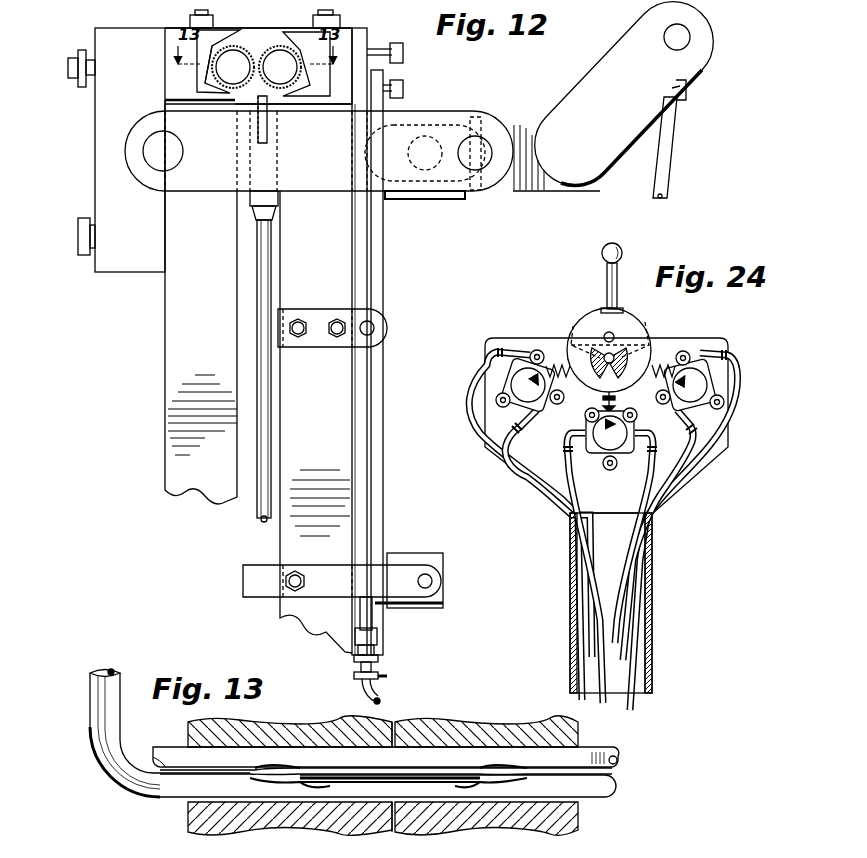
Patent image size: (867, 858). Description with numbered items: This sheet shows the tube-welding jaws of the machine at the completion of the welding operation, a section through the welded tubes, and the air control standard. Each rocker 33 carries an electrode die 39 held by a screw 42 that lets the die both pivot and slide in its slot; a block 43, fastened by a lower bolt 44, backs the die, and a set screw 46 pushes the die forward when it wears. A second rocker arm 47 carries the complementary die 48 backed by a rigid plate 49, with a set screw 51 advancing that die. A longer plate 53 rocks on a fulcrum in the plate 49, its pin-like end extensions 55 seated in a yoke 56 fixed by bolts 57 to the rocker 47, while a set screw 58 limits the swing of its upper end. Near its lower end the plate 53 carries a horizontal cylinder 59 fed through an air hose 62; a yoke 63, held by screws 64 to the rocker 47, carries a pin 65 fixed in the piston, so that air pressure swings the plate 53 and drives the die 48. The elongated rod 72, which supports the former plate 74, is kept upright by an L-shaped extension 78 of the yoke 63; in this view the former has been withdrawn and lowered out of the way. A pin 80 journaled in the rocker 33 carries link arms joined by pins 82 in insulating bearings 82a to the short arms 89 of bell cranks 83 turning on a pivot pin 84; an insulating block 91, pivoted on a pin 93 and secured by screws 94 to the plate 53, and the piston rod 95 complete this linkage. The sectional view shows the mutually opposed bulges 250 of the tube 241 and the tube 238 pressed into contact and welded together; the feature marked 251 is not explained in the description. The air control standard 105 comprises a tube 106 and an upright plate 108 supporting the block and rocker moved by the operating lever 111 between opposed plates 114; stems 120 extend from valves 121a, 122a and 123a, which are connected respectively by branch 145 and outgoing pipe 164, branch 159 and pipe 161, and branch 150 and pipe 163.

In FIG. 12, the rocker 33 is at (165, 455).
In FIG. 12, the electrode die 39 is at (170, 28).
In FIG. 13, the electrode die 39 is at (395, 736).
In FIG. 12, the screw 42 is at (200, 12).
In FIG. 12, the block 43 is at (95, 156).
In FIG. 12, the lower bolt 44 is at (78, 234).
In FIG. 12, the set screw 46 is at (68, 78).
In FIG. 12, the second rocker arm 47 is at (280, 612).
In FIG. 12, the complementary die 48 is at (366, 32).
In FIG. 13, the complementary die 48 is at (282, 822).
In FIG. 12, the rigid plate 49 is at (357, 260).
In FIG. 12, the set screw 51 is at (403, 54).
In FIG. 12, the second rigid plate 53 is at (382, 258).
In FIG. 12, the pin-like end extensions 55 is at (376, 326).
In FIG. 12, the yoke 56 is at (318, 347).
In FIG. 12, the bolts 57 is at (335, 318).
In FIG. 12, the set screw 58 is at (403, 88).
In FIG. 12, the horizontal cylinder 59 is at (405, 555).
In FIG. 12, the air hose 62 is at (362, 690).
In FIG. 12, the yoke 63 is at (325, 597).
In FIG. 12, the screws 64 is at (297, 571).
In FIG. 12, the pin 65 is at (440, 578).
In FIG. 12, the elongated rod 72 is at (258, 512).
In FIG. 12, the former plate 74 is at (280, 106).
In FIG. 12, the L-shaped extension 78 is at (243, 580).
In FIG. 12, the pin 80 is at (180, 152).
In FIG. 12, the pin 82 is at (488, 162).
In FIG. 12, the bearing 82a is at (458, 118).
In FIG. 12, the bell crank 83 is at (544, 117).
In FIG. 12, the pivot pin 84 is at (690, 37).
In FIG. 12, the arm 89 is at (560, 192).
In FIG. 12, the block 91 is at (392, 199).
In FIG. 12, the pin 93 is at (425, 178).
In FIG. 12, the screws 94 is at (478, 118).
In FIG. 12, the piston rod 95 is at (678, 128).
In FIG. 24, the air control standard 105 is at (680, 332).
In FIG. 24, the tube 106 is at (570, 546).
In FIG. 24, the upright plate 108 is at (728, 447).
In FIG. 24, the operating lever 111 is at (606, 282).
In FIG. 24, the opposed plates 114 is at (675, 344).
In FIG. 24, the stems 120 is at (573, 330).
In FIG. 24, the valve 121a is at (728, 389).
In FIG. 24, the valve 122a is at (609, 471).
In FIG. 24, the valve 123a is at (500, 398).
In FIG. 24, the branch 145 is at (650, 684).
In FIG. 24, the branch 150 is at (470, 425).
In FIG. 24, the branch 159 is at (580, 683).
In FIG. 24, the pipe 161 is at (628, 650).
In FIG. 24, the pipe 163 is at (500, 465).
In FIG. 24, the pipe 164 is at (622, 592).
In FIG. 12, the tube 238 is at (218, 78).
In FIG. 13, the tube 238 is at (418, 745).
In FIG. 12, the tube 241 is at (250, 98).
In FIG. 13, the tube 241 is at (375, 790).
In FIG. 12, the bulges 250 is at (272, 46).
In FIG. 13, the bulges 250 is at (288, 766).
In FIG. 13, the strand 251 is at (290, 782).